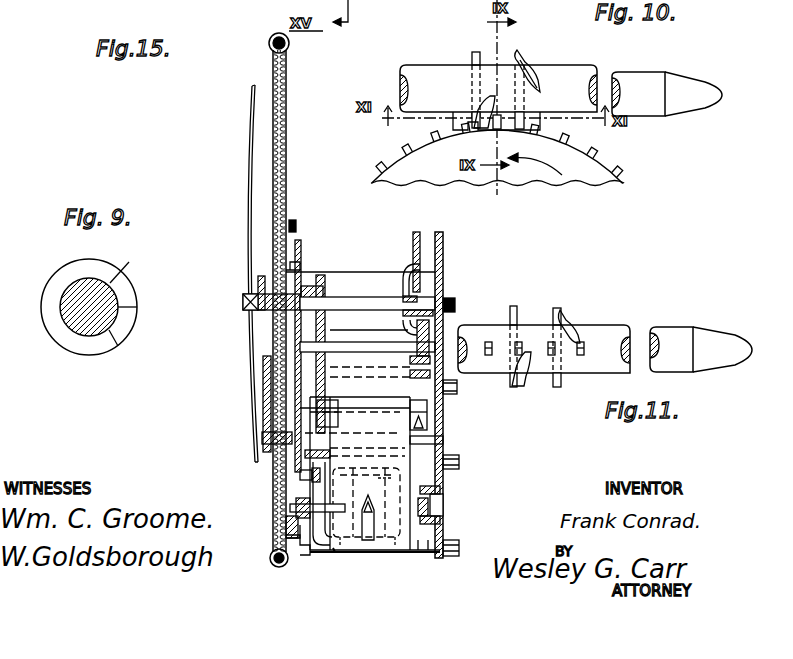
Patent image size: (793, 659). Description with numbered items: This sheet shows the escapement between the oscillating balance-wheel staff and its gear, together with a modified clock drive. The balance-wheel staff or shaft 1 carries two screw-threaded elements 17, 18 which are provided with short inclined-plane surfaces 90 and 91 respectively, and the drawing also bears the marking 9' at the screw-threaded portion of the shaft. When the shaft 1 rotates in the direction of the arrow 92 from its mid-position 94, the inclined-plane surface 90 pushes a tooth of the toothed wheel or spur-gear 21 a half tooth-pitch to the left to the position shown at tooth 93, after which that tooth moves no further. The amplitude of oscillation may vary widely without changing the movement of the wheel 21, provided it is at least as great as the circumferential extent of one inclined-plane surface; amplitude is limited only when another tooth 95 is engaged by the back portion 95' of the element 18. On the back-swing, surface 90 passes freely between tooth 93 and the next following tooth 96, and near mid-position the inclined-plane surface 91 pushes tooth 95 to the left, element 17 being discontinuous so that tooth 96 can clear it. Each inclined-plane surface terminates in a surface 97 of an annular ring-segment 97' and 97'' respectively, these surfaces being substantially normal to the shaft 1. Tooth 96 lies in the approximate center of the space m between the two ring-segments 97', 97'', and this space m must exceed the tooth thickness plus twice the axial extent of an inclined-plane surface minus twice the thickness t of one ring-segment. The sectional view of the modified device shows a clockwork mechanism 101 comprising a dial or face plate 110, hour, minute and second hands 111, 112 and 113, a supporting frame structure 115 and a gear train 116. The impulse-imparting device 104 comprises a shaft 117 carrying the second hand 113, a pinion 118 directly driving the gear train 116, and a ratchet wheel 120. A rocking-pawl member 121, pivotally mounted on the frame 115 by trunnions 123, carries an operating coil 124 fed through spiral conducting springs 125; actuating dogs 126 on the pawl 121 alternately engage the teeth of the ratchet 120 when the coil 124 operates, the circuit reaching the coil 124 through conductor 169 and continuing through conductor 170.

In FIG. 10, the balance-wheel staff 1 is at (594, 60).
In FIG. 11, the balance-wheel staff 1 is at (616, 330).
In FIG. 9, the balance-wheel staff 1 is at (62, 303).
In FIG. 10, the slot 9' is at (506, 80).
In FIG. 11, the screw-threaded element 17 is at (516, 318).
In FIG. 10, the screw-threaded element 18 is at (560, 68).
In FIG. 11, the screw-threaded element 18 is at (575, 332).
In FIG. 9, the screw-threaded element 18 is at (110, 275).
In FIG. 10, the toothed wheel 21 is at (574, 175).
In FIG. 11, the toothed wheel 21 is at (580, 360).
In FIG. 10, the inclined-plane surface 90 is at (484, 96).
In FIG. 11, the inclined-plane surface 90 is at (520, 360).
In FIG. 9, the inclined-plane surface 90 is at (114, 352).
In FIG. 11, the inclined-plane surface 91 is at (562, 340).
In FIG. 9, the inclined-plane surface 91 is at (125, 278).
In FIG. 10, the arrow 92 is at (713, 78).
In FIG. 11, the arrow 92 is at (701, 349).
In FIG. 10, the tooth 93 is at (492, 131).
In FIG. 9, the mid-position 94 is at (140, 310).
In FIG. 10, the tooth 95 is at (535, 160).
In FIG. 10, the back portion 95' is at (556, 59).
In FIG. 11, the back portion 95' is at (576, 318).
In FIG. 10, the tooth 96 is at (511, 143).
In FIG. 10, the surface 97 is at (496, 79).
In FIG. 11, the surface 97 is at (516, 350).
In FIG. 11, the annular ring-segment 97' is at (487, 314).
In FIG. 9, the annular ring-segment 97' is at (33, 343).
In FIG. 10, the annular ring-segment 97'' is at (553, 46).
In FIG. 11, the annular ring-segment 97'' is at (568, 332).
In FIG. 15, the clockwork mechanism 101 is at (334, 193).
In FIG. 15, the impulse-imparting device 104 is at (372, 583).
In FIG. 10, the impulse-imparting device 104 is at (437, 0).
In FIG. 15, the dial 110 is at (273, 66).
In FIG. 15, the hour hand 111 is at (262, 370).
In FIG. 15, the minute hand 112 is at (252, 242).
In FIG. 15, the second hand 113 is at (266, 406).
In FIG. 15, the supporting frame structure 115 is at (445, 258).
In FIG. 15, the gear train 116 is at (369, 255).
In FIG. 15, the shaft 117 is at (445, 440).
In FIG. 15, the pinion 118 is at (427, 436).
In FIG. 15, the ratchet wheel 120 is at (325, 456).
In FIG. 15, the rocking-pawl member 121 is at (322, 548).
In FIG. 15, the trunnions 123 is at (298, 508).
In FIG. 15, the operating coil 124 is at (400, 566).
In FIG. 15, the spiral conducting springs 125 is at (287, 520).
In FIG. 15, the actuating dogs 126 is at (300, 476).
In FIG. 15, the conductor 169 is at (427, 548).
In FIG. 15, the conductor 170 is at (305, 544).
In FIG. 10, the space m is at (516, 89).
In FIG. 10, the thickness t is at (480, 33).